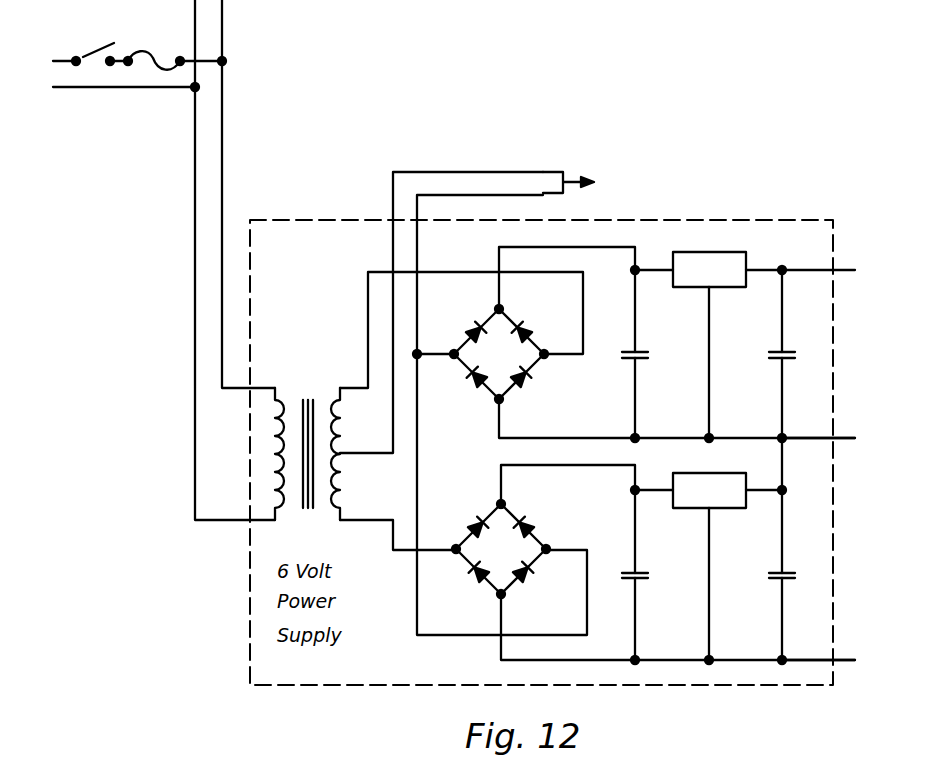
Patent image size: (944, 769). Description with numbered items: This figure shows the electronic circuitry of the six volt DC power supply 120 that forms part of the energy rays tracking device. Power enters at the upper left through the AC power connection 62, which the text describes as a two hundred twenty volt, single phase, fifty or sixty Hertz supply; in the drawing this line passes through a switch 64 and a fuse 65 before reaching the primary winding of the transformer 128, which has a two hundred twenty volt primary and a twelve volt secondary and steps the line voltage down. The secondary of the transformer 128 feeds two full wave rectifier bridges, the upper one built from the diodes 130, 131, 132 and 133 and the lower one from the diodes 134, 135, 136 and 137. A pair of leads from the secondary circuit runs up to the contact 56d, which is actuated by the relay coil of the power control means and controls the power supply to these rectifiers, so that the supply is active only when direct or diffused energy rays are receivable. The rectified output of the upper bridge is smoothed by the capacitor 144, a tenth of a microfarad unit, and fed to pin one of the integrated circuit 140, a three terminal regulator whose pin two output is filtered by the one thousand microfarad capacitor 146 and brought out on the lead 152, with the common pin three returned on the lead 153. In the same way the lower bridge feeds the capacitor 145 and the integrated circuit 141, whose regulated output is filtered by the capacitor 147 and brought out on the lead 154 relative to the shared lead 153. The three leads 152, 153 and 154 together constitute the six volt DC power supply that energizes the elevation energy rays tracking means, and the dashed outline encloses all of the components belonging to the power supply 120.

The AC power connection 62 is at (47, 64).
The switch 64 is at (96, 42).
The fuse 65 is at (147, 45).
The contact 56d is at (589, 182).
The 6 volt DC power supply 120 is at (680, 216).
The transformer 128 is at (304, 390).
The diode 130 is at (473, 326).
The diode 131 is at (534, 310).
The diode 132 is at (472, 386).
The diode 133 is at (525, 386).
The diode 134 is at (475, 521).
The diode 135 is at (536, 506).
The diode 136 is at (474, 581).
The diode 137 is at (524, 581).
The integrated circuit 140 is at (710, 252).
The integrated circuit 141 is at (710, 473).
The capacitor 144 is at (641, 362).
The capacitor 145 is at (641, 582).
The capacitor 146 is at (788, 362).
The capacitor 147 is at (788, 582).
The 6 volt DC power supply lead 152 is at (856, 270).
The 6 volt DC power supply lead 153 is at (856, 438).
The 6 volt DC power supply lead 154 is at (856, 660).